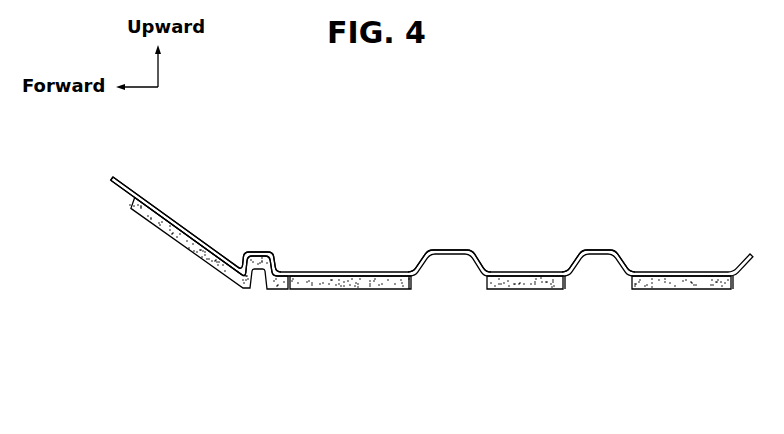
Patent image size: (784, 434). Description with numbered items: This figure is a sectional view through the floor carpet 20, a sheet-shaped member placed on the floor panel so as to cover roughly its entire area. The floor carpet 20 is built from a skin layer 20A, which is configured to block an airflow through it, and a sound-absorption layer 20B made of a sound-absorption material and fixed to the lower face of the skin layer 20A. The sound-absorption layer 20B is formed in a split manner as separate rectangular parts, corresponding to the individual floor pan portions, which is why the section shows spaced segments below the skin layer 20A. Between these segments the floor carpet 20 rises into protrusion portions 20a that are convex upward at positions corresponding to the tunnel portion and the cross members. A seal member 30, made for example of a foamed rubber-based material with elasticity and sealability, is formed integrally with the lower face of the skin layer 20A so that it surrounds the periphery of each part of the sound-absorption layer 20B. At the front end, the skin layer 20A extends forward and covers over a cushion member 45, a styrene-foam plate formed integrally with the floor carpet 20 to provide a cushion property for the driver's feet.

The floor carpet 20 is at (547, 136).
The skin layer 20A is at (128, 183).
The sound-absorption layer 20B is at (347, 292).
The protrusion portions 20a is at (258, 277).
The seal member 30 is at (417, 283).
The cushion member 45 is at (187, 252).